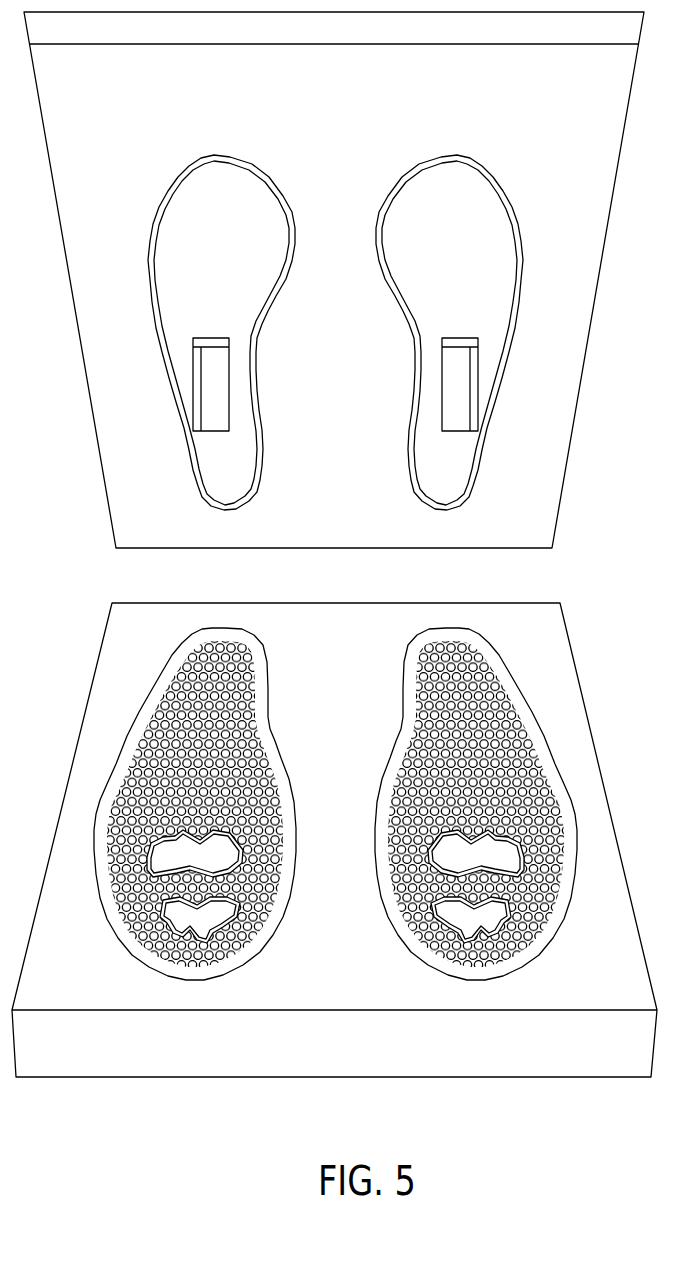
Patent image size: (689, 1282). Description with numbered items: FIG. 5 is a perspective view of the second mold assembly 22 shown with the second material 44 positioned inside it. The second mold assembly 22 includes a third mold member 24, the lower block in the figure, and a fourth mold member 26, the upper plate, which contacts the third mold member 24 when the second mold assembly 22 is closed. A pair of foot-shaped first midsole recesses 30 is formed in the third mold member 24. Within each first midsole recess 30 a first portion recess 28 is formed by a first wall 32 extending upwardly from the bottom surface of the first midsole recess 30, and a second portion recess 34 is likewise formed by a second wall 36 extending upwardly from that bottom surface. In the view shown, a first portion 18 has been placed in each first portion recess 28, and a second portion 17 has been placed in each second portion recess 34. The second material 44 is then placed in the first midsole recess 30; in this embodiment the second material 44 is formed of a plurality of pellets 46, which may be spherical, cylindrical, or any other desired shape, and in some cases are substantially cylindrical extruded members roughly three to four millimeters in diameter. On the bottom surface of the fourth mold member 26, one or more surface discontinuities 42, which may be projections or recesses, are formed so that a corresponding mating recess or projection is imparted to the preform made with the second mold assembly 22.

The second portion 17 is at (456, 850).
The first portion 18 is at (437, 922).
The second mold assembly 22 is at (541, 577).
The third mold member 24 is at (325, 706).
The fourth mold member 26 is at (323, 107).
The first portion recess 28 is at (475, 933).
The first midsole recess 30 is at (499, 648).
The first wall 32 is at (438, 926).
The second portion recess 34 is at (498, 840).
The second wall 36 is at (455, 830).
The surface discontinuity 42 is at (456, 447).
The second material 44 is at (263, 705).
The pellets 46 is at (560, 917).